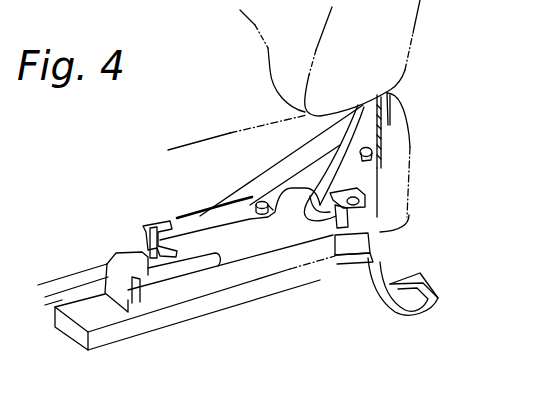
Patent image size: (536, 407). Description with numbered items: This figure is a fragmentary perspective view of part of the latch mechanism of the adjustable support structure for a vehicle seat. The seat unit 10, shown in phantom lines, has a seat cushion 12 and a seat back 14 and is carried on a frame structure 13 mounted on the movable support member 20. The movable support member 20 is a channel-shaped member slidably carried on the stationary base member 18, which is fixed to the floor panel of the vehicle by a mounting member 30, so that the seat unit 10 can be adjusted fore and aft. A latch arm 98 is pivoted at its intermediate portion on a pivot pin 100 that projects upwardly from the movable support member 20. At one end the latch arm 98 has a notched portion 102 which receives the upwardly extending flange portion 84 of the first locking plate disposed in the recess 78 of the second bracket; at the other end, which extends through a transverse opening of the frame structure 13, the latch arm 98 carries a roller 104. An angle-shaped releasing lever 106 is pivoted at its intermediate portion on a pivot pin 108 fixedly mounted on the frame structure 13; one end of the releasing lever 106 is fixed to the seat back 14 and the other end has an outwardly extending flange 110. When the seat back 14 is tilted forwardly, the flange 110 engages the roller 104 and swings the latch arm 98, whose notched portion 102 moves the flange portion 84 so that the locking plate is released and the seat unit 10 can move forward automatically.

The seat unit 10 is at (420, 20).
The seat back 14 is at (413, 41).
The seat cushion 12 is at (207, 143).
The latch arm 98 is at (197, 213).
The pivot pin 108 is at (391, 127).
The releasing lever 106 is at (389, 93).
The frame structure 13 is at (408, 151).
The roller 104 is at (366, 207).
The pivot pin 100 is at (254, 220).
The stationary base member 18 is at (268, 303).
The recess 78 is at (177, 247).
The flange portion 84 is at (152, 226).
The notched portion 102 is at (143, 232).
The movable support member 20 is at (372, 247).
The flange 110 is at (343, 226).
The mounting member 30 is at (418, 316).